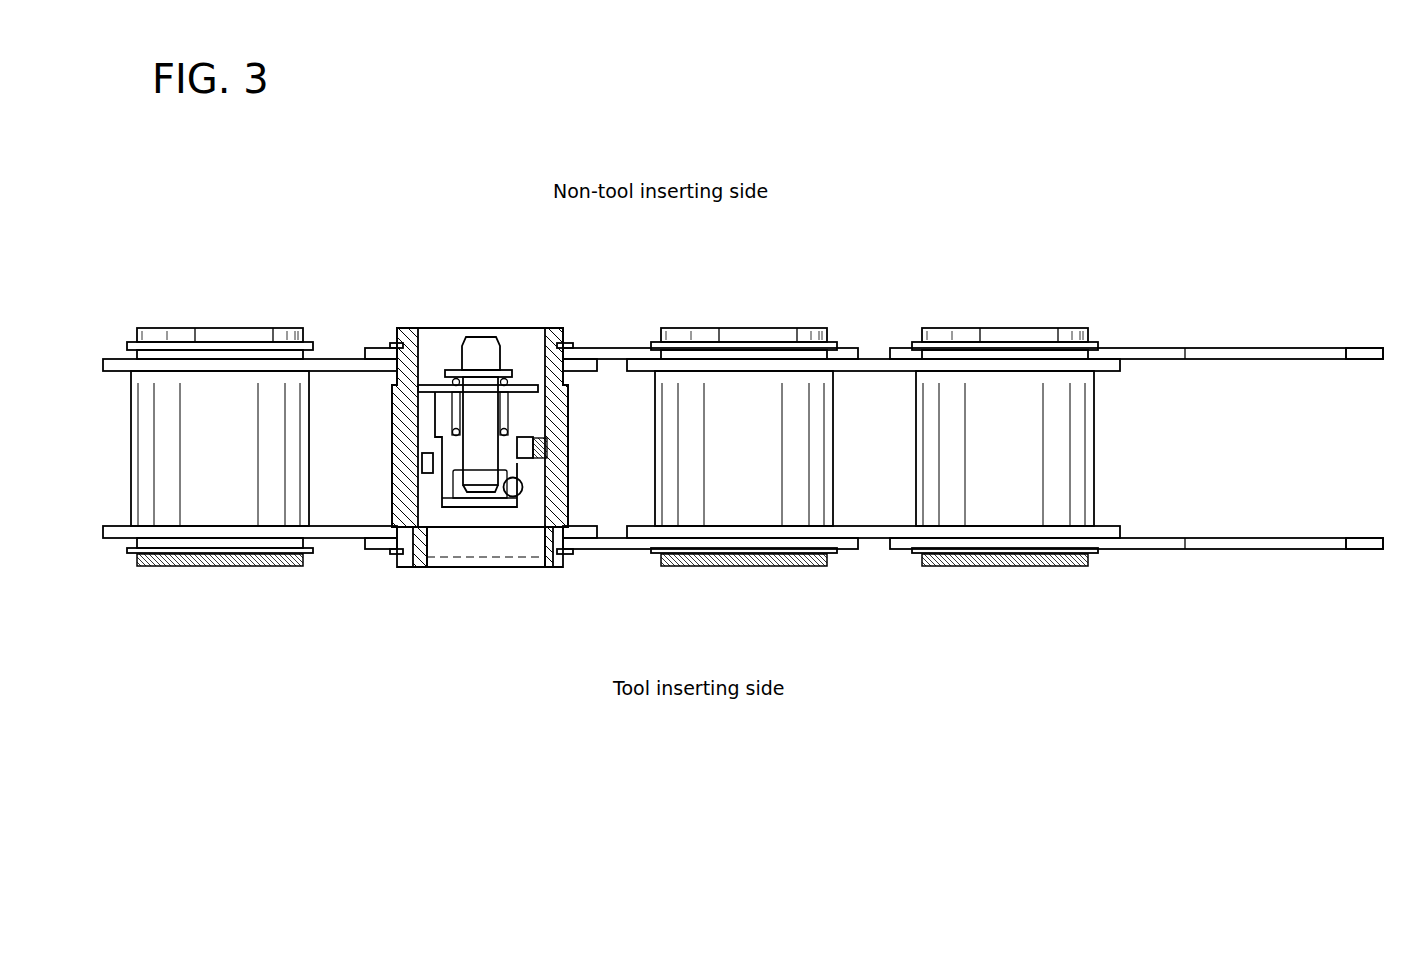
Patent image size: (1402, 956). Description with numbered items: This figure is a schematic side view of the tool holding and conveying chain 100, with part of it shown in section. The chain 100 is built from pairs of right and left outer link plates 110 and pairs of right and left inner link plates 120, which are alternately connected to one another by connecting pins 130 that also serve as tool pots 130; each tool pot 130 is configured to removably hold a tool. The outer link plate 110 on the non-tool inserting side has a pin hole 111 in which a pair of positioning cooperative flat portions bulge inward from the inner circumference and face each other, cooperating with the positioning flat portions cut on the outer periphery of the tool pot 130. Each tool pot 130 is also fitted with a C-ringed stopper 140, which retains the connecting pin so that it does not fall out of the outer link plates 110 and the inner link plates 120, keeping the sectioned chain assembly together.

The tool holding and conveying chain 100 is at (888, 142).
The outer link plate 110 is at (612, 352).
The pin hole 111 is at (1345, 356).
The inner link plate 120 is at (345, 365).
The connecting pin (tool pot) 130 is at (250, 328).
The C-ringed stopper 140 is at (126, 342).